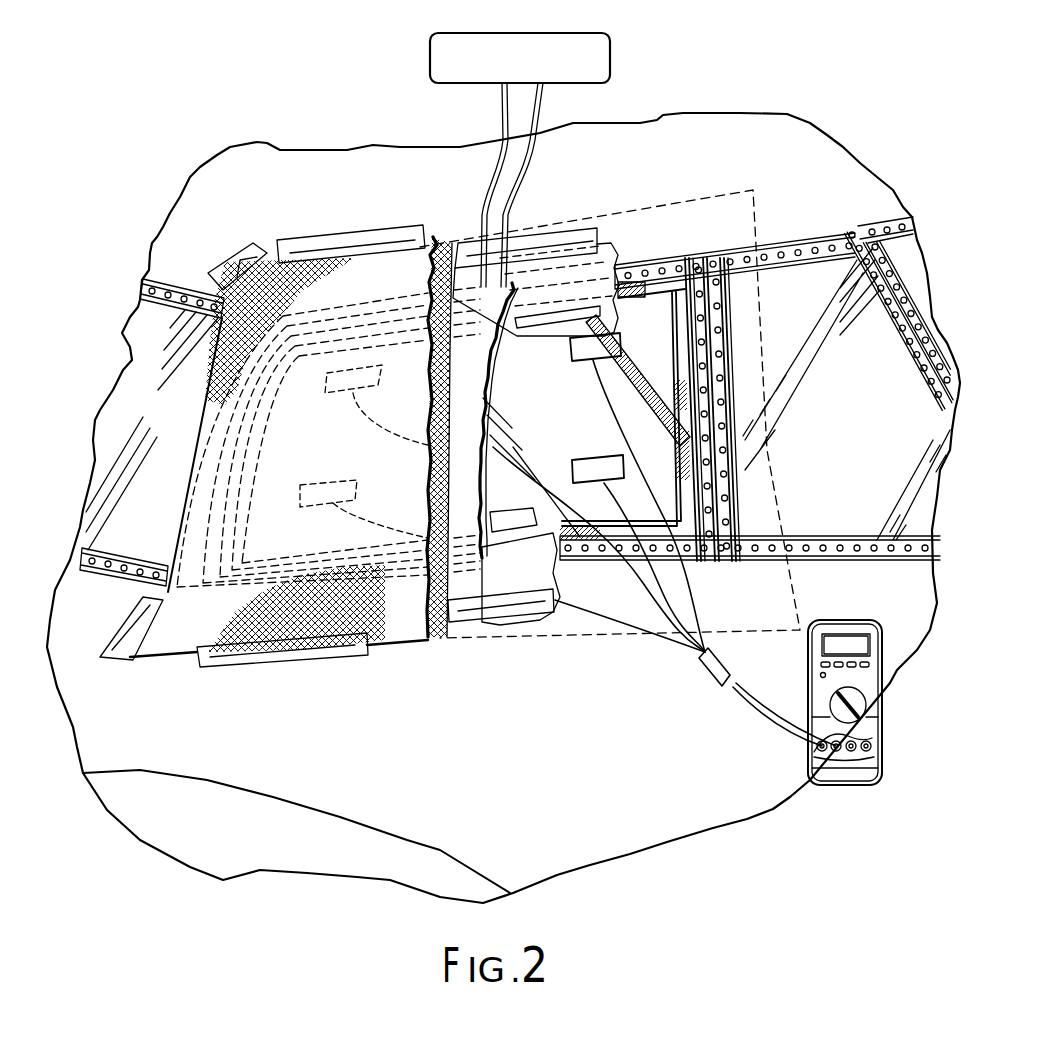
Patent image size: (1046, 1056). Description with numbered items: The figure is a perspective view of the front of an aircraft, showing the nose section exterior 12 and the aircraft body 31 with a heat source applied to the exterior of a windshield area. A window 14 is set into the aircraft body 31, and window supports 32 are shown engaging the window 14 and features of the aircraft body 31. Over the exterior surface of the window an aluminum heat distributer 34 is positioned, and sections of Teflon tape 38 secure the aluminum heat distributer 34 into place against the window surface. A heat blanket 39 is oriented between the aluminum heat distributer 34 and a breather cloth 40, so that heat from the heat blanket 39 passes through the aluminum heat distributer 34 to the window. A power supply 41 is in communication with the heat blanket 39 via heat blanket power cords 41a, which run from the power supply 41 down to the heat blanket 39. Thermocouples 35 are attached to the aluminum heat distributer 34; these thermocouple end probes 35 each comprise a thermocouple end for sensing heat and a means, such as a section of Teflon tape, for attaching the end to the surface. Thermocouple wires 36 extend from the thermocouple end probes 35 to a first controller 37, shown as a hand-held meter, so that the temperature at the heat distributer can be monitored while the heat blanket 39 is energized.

The nose section exterior 12 is at (633, 855).
The window 14 is at (690, 262).
The aircraft body 31 is at (375, 167).
The window supports 32 is at (686, 366).
The aluminum heat distributer 34 is at (636, 328).
The thermocouples 35 is at (593, 356).
The thermocouple wires 36 is at (672, 636).
The first controller 37 is at (847, 786).
The sections of Teflon tape 38 is at (552, 318).
The heat blanket 39 is at (478, 346).
The breather cloth 40 is at (450, 282).
The power supply 41 is at (505, 33).
The heat blanket power cords 41a is at (533, 105).